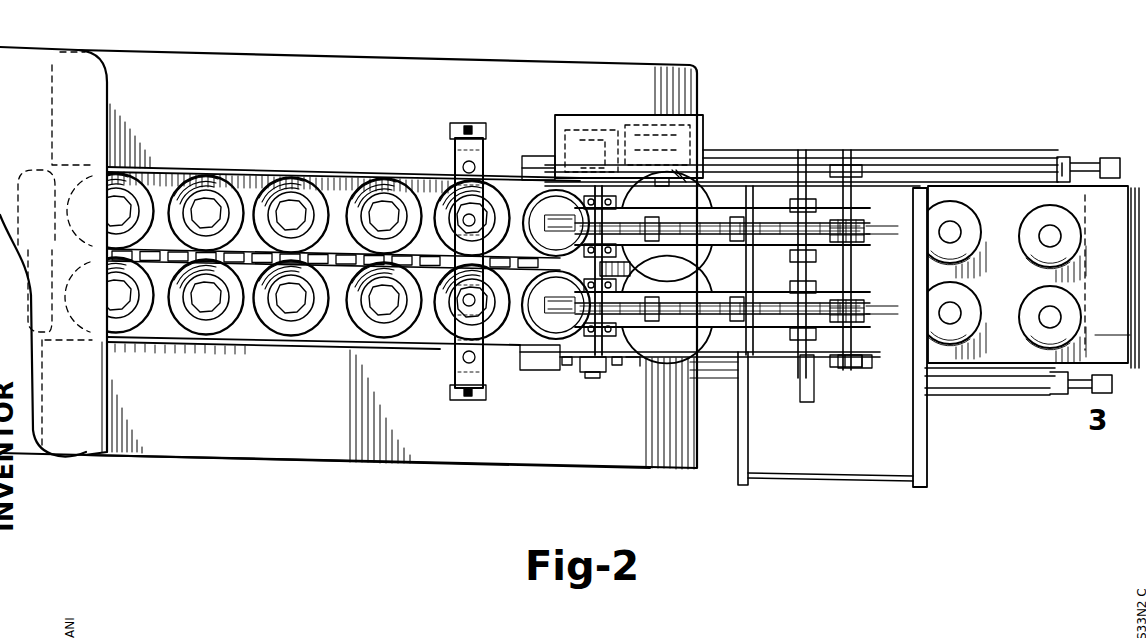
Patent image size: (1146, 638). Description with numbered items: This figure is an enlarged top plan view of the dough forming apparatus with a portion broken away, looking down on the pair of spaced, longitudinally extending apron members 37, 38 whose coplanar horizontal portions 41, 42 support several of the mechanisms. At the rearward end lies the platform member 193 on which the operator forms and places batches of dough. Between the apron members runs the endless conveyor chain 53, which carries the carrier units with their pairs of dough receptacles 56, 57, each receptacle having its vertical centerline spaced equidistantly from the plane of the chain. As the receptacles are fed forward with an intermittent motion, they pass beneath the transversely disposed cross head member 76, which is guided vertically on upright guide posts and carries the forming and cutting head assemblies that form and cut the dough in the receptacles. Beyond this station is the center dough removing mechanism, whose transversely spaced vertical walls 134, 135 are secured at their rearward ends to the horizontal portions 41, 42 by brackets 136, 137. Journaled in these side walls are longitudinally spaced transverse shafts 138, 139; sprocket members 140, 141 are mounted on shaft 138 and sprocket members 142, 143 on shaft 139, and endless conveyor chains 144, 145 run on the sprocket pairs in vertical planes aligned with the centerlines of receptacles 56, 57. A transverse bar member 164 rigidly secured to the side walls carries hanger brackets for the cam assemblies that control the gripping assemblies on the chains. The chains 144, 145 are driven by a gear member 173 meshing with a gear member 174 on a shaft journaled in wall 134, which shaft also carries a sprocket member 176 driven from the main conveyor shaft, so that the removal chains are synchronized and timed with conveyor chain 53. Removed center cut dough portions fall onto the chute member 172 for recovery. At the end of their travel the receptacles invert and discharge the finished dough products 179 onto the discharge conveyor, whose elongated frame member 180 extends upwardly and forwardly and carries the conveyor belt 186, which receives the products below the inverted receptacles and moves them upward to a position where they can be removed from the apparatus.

The apron member 37 is at (350, 54).
The apron member 38 is at (393, 474).
The horizontal portion 41 is at (533, 80).
The horizontal portion 42 is at (522, 452).
The endless conveyor chain 53 is at (150, 268).
The dough receptacle 56 is at (290, 338).
The dough receptacle 57 is at (300, 176).
The cross head member 76 is at (455, 345).
The vertical wall 134 is at (725, 178).
The vertical wall 135 is at (770, 356).
The bracket 136 is at (530, 155).
The bracket 137 is at (525, 373).
The shaft 138 is at (580, 372).
The shaft 139 is at (872, 365).
The sprocket member 140 is at (582, 217).
The sprocket member 141 is at (628, 368).
The sprocket member 142 is at (860, 228).
The sprocket member 143 is at (862, 300).
The endless conveyor chain 144 is at (698, 248).
The endless conveyor chain 145 is at (696, 328).
The bar member 164 is at (797, 268).
The chute member 172 is at (798, 470).
The gear member 173 is at (606, 128).
The gear member 174 is at (700, 118).
The sprocket member 176 is at (686, 188).
The dough products 179 is at (1022, 262).
The frame member 180 is at (1003, 388).
The conveyor belt 186 is at (998, 192).
The platform member 193 is at (96, 113).